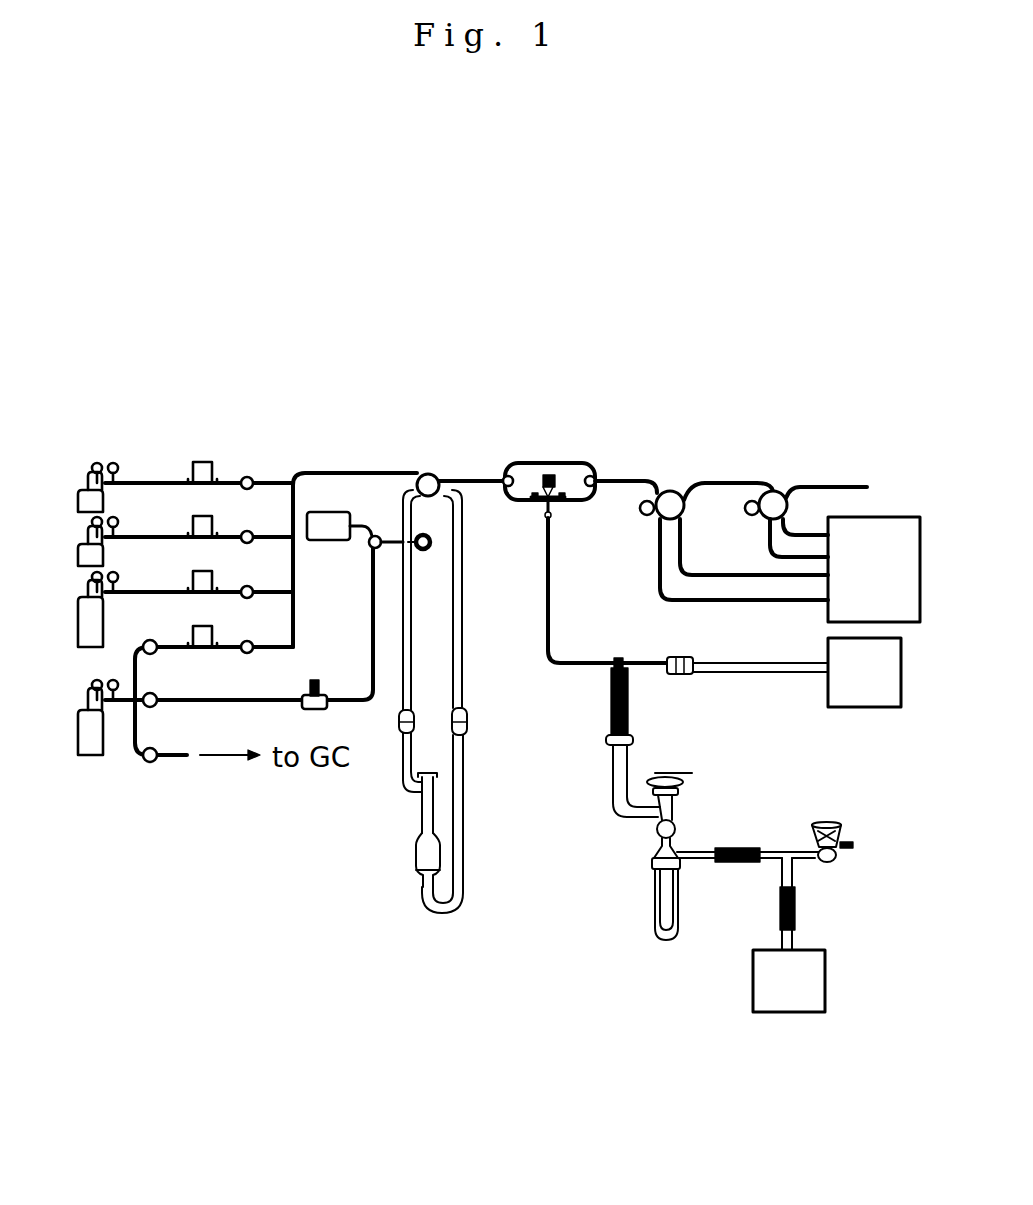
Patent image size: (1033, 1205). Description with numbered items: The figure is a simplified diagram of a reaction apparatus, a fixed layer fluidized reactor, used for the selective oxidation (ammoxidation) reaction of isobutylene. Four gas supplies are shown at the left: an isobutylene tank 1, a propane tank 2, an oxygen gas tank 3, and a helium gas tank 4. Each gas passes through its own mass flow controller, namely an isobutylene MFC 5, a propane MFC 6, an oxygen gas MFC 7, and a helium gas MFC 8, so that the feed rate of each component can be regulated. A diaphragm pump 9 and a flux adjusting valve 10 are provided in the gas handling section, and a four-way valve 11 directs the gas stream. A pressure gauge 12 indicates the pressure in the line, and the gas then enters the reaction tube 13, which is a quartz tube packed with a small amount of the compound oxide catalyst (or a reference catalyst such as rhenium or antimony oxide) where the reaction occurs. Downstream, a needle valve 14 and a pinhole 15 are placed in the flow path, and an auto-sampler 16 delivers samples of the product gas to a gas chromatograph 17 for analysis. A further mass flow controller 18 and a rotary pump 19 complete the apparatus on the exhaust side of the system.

The isobutylene tank 1 is at (80, 487).
The propane tank 2 is at (80, 541).
The oxygen gas tank 3 is at (81, 609).
The helium gas tank 4 is at (81, 717).
The isobutylene MFC 5 is at (188, 463).
The propane MFC 6 is at (188, 517).
The oxygen gas MFC 7 is at (188, 572).
The helium gas MFC 8 is at (188, 626).
The diaphragm pump 9 is at (355, 542).
The flux adjusting valve 10 is at (337, 628).
The four-way valve 11 is at (459, 470).
The pressure gauge 12 is at (423, 559).
The reaction tube 13 is at (425, 701).
The needle valve 14 is at (549, 504).
The pinhole 15 is at (633, 718).
The auto-sampler 16 is at (731, 484).
The gas chromatograph 17 is at (874, 569).
The mass flow controller 18 is at (864, 672).
The rotary pump 19 is at (789, 981).